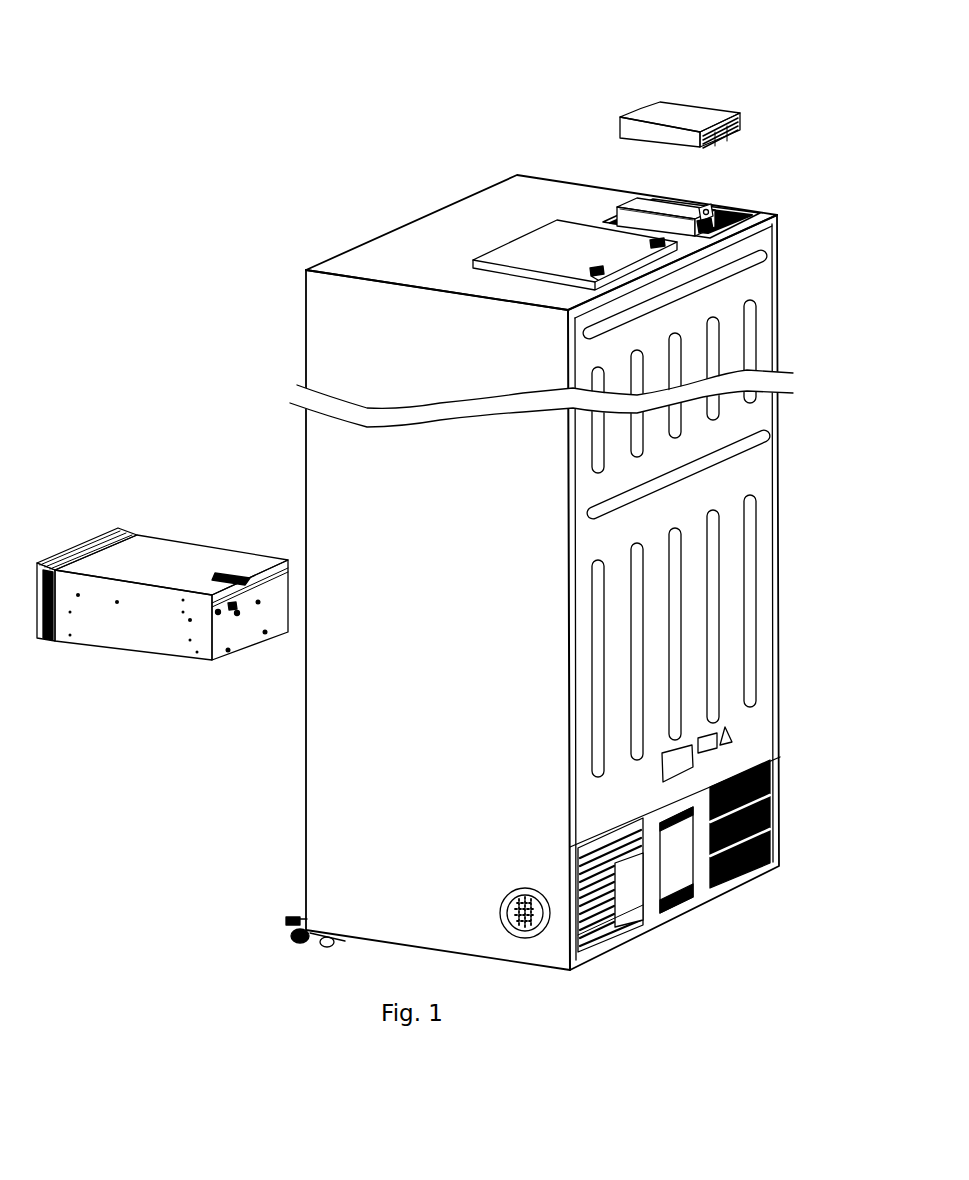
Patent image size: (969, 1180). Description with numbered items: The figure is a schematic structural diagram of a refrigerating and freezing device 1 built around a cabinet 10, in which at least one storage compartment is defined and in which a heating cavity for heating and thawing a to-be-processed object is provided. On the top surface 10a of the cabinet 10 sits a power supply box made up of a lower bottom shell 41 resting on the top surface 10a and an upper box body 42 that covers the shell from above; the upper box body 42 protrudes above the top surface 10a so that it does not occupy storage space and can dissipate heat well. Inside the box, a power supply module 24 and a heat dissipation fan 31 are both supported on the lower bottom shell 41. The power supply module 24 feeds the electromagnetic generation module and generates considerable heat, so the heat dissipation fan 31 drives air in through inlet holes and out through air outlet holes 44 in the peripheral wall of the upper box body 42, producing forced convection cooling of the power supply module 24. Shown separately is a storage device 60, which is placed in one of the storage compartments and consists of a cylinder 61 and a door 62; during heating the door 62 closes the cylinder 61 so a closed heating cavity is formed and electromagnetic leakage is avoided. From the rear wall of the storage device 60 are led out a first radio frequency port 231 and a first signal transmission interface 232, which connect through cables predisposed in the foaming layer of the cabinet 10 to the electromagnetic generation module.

The refrigerating and freezing device 1 is at (80, 23).
The cabinet 10 is at (300, 283).
The top surface of the cabinet 10a is at (455, 219).
The power supply module 24 is at (650, 205).
The heat dissipation fan 31 is at (695, 227).
The lower bottom shell 41 is at (727, 223).
The upper box body 42 is at (690, 113).
The air outlet holes 44 is at (742, 131).
The storage device 60 is at (135, 522).
The cylinder 61 is at (142, 637).
The door 62 is at (42, 630).
The first radio frequency port 231 is at (239, 616).
The first signal transmission interface 232 is at (218, 616).